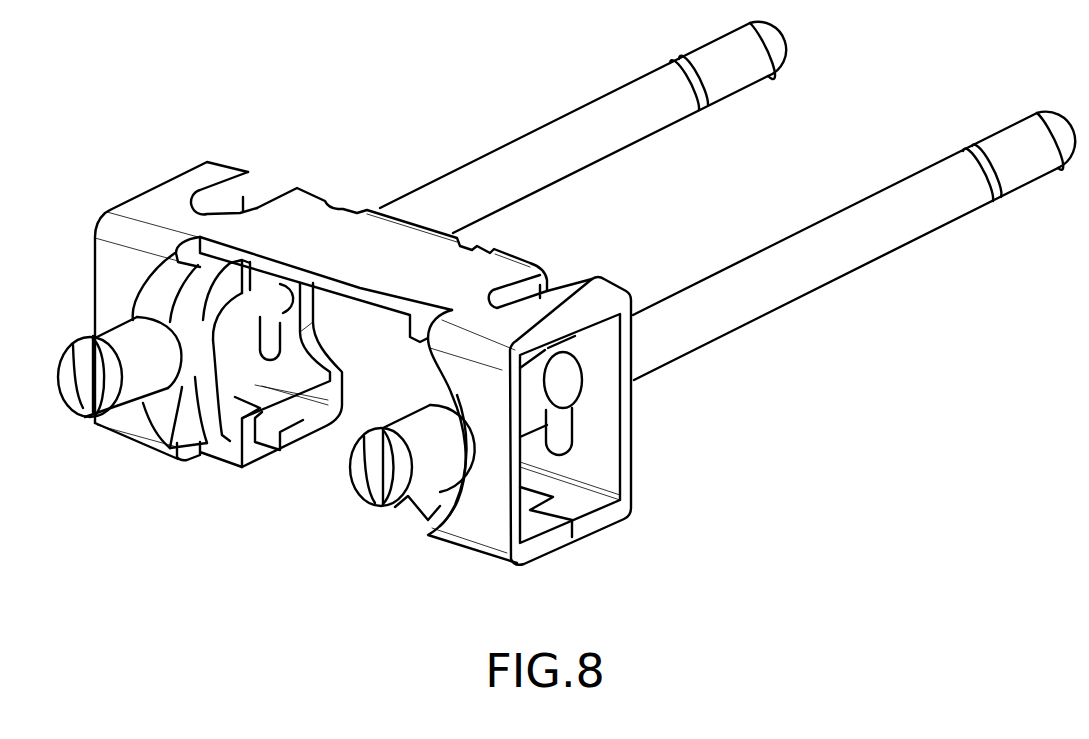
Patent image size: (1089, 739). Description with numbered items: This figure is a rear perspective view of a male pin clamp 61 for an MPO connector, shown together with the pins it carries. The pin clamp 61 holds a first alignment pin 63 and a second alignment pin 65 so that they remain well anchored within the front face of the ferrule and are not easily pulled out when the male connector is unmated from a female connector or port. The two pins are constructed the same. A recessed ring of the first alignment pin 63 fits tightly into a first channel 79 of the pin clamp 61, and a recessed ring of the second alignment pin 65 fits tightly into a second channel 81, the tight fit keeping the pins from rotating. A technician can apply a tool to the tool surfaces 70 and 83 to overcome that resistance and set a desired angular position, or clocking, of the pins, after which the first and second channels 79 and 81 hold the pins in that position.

The pin clamp 61 is at (149, 206).
The first alignment pin 63 is at (810, 267).
The second alignment pin 65 is at (597, 140).
The tool surface 70 is at (368, 490).
The first channel 79 is at (573, 286).
The second channel 81 is at (242, 184).
The tool surface 83 is at (78, 397).